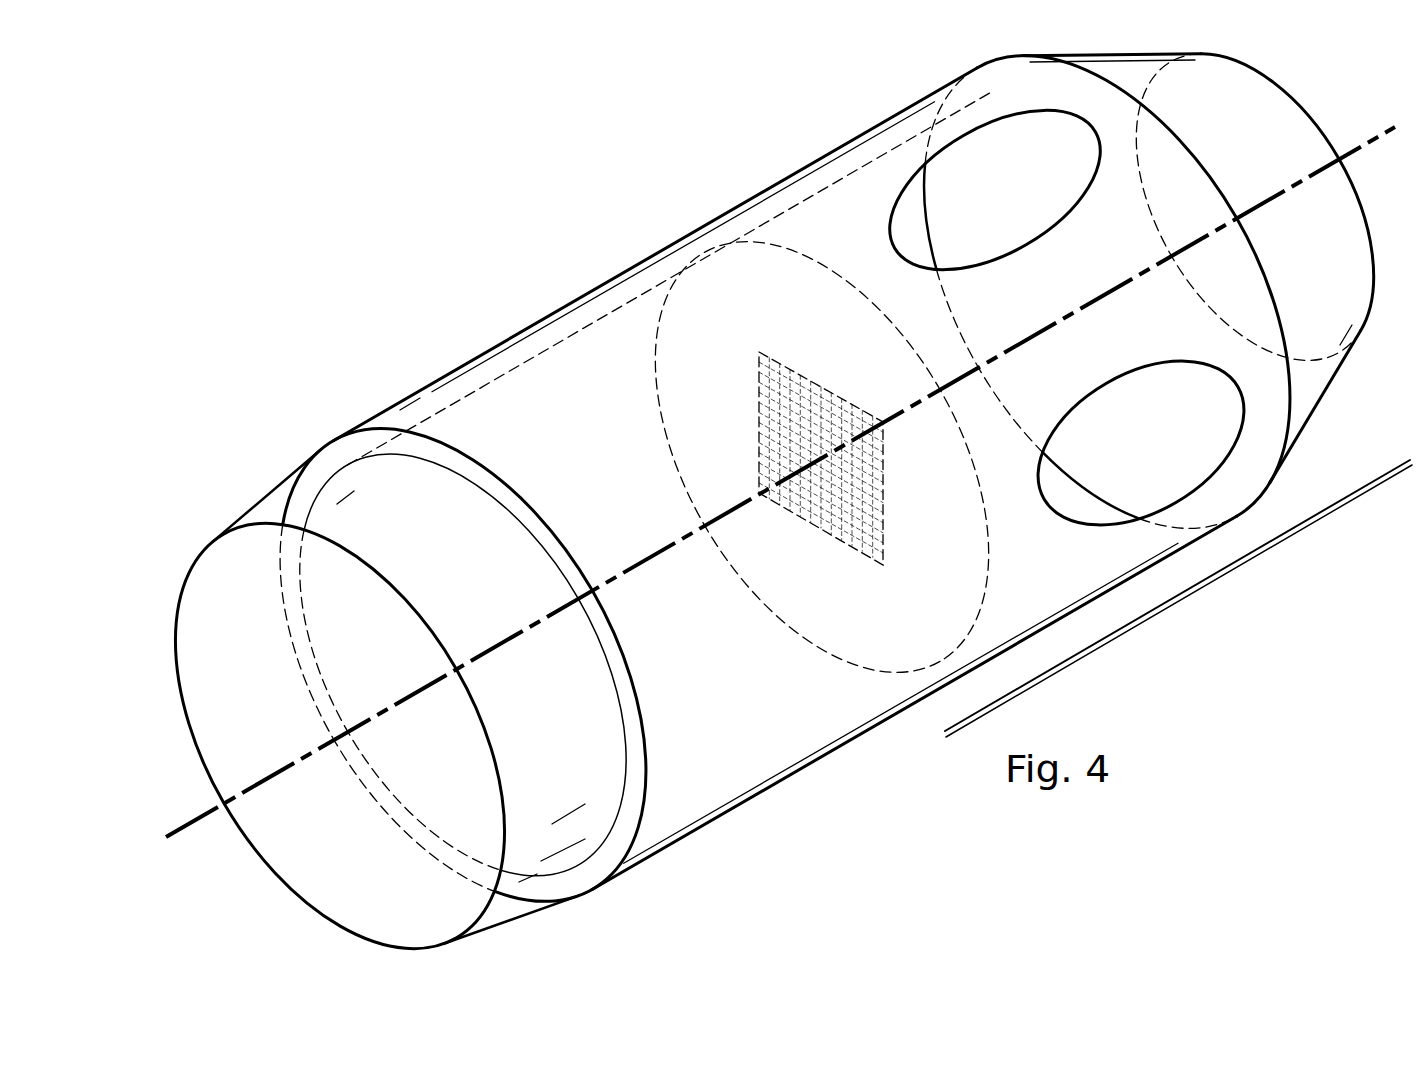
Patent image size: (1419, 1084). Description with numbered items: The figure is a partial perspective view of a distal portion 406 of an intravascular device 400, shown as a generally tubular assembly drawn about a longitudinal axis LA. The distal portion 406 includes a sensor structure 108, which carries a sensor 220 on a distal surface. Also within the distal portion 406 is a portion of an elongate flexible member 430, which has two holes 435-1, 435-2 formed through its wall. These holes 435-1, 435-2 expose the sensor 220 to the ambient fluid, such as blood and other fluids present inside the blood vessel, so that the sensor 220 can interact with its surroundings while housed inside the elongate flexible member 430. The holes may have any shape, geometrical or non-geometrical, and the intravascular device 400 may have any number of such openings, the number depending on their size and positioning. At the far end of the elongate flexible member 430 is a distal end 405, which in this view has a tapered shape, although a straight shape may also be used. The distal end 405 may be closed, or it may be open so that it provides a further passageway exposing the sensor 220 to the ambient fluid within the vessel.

The intravascular device 400 is at (504, 275).
The elongate flexible member 430 is at (655, 250).
The distal end 405 is at (1313, 123).
The sensor structure 108 is at (177, 653).
The hole 435-1 is at (1027, 207).
The hole 435-2 is at (1176, 466).
The sensor 220 is at (757, 408).
The distal portion 406 is at (1192, 581).
The longitudinal axis LA is at (188, 824).